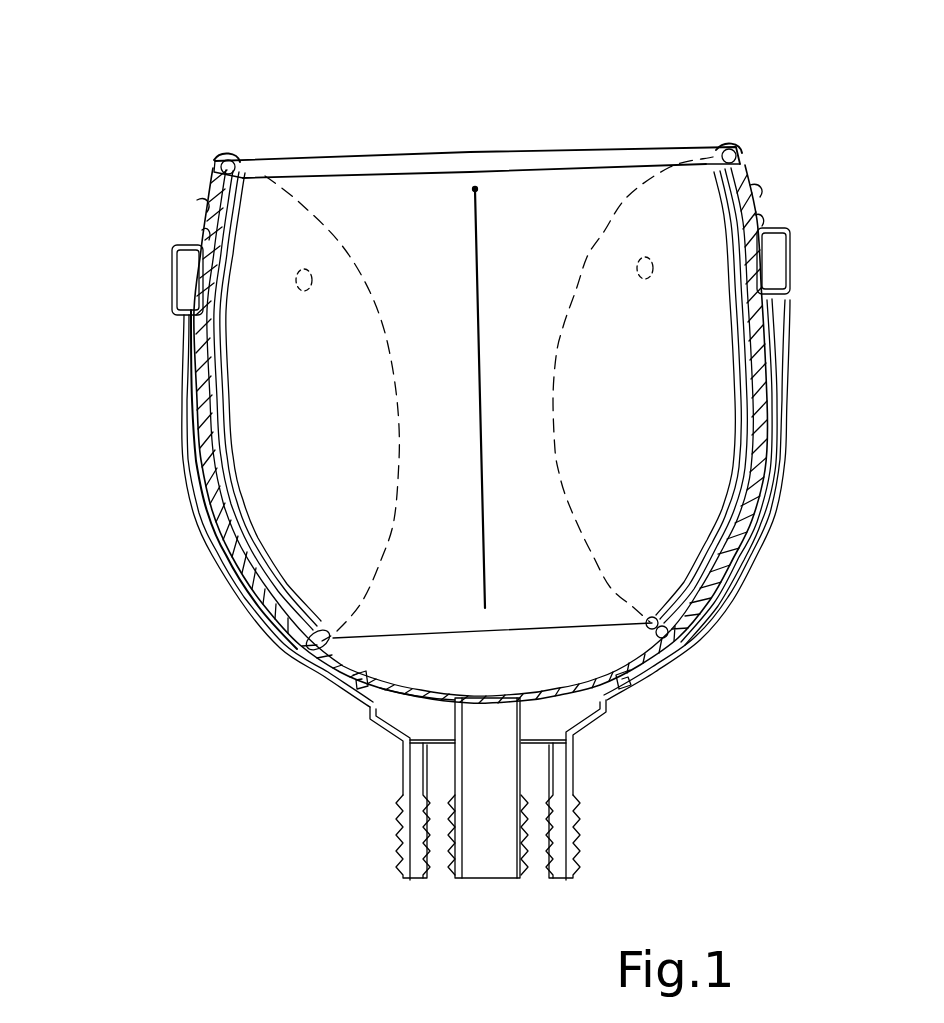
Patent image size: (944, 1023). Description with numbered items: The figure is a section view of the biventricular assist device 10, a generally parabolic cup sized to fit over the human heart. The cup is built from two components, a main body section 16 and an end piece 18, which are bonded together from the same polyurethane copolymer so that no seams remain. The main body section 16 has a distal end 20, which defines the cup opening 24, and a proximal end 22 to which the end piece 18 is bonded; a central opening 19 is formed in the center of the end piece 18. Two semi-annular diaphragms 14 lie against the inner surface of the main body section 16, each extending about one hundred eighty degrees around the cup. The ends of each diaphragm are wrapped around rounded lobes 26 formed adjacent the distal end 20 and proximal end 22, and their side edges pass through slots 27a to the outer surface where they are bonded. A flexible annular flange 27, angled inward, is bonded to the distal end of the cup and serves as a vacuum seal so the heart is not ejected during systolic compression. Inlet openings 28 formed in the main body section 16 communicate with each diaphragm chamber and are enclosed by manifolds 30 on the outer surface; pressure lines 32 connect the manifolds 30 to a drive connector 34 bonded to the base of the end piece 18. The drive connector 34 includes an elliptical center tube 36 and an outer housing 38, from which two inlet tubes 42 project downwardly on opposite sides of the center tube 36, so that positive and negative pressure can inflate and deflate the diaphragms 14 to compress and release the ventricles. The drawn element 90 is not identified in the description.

The biventricular assist device 10 is at (128, 191).
The semi-annular diaphragms 14 is at (238, 462).
The main body section 16 is at (775, 408).
The end piece 18 is at (397, 690).
The central opening 19 is at (480, 698).
The distal end 20 is at (292, 160).
The proximal end 22 is at (325, 655).
The cup opening 24 is at (544, 110).
The rounded lobes 26 is at (220, 160).
The flexible annular flange 27 is at (363, 168).
The slots 27a is at (483, 262).
The inlet openings 28 is at (207, 282).
The manifolds 30 is at (168, 283).
The pressure lines 32 is at (183, 425).
The drive connector 34 is at (596, 760).
The elliptical center tube 36 is at (453, 875).
The outer housing 38 is at (372, 735).
The inlet tubes 42 is at (405, 855).
The retaining hook 90 is at (630, 690).